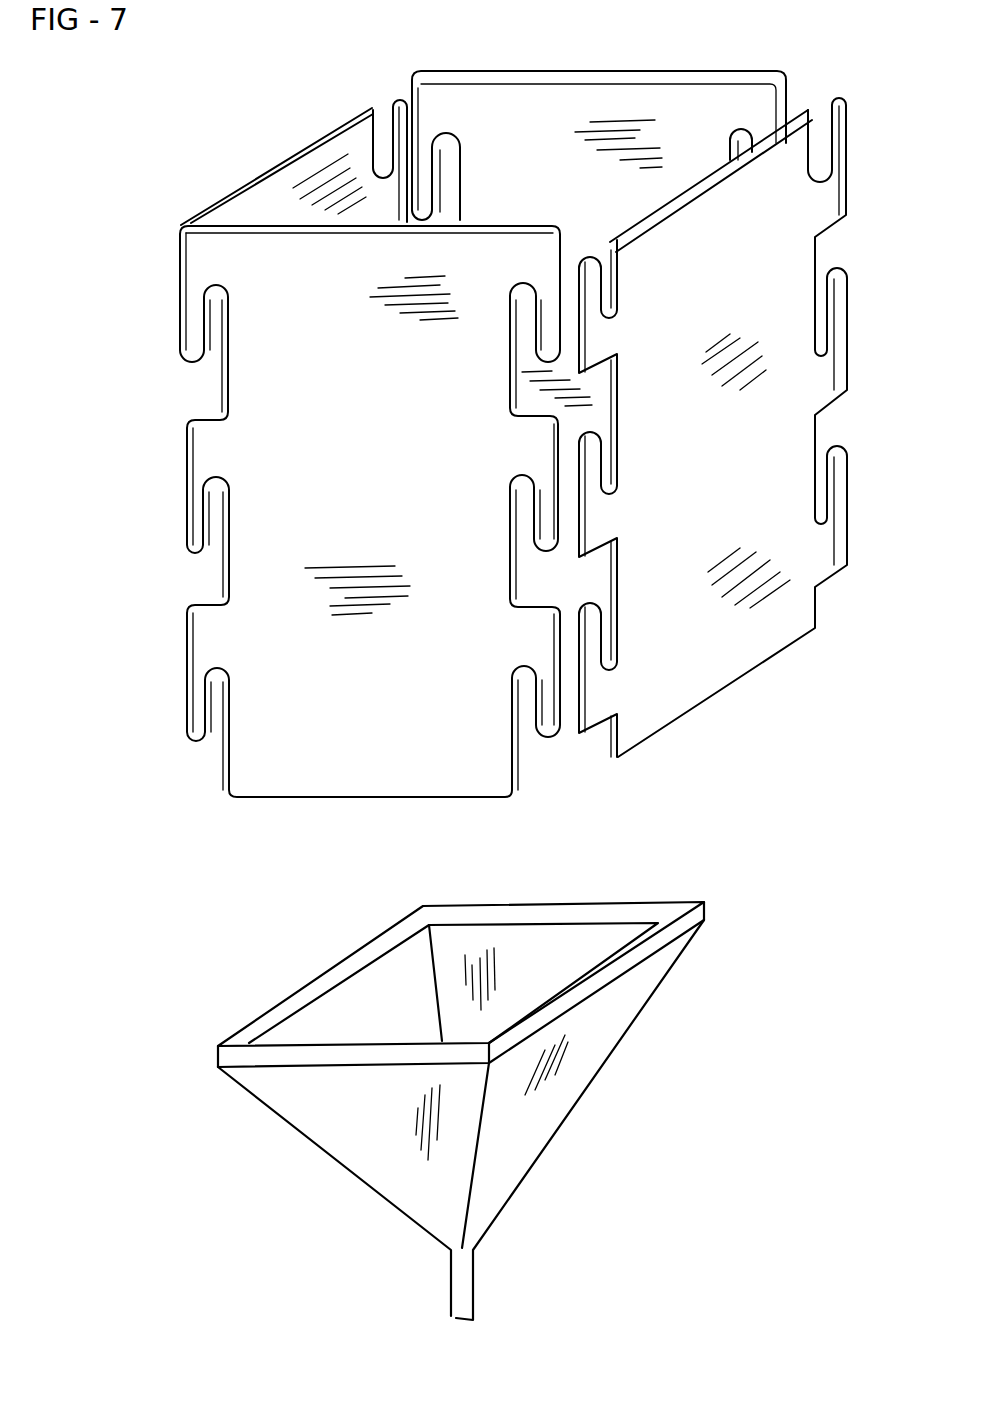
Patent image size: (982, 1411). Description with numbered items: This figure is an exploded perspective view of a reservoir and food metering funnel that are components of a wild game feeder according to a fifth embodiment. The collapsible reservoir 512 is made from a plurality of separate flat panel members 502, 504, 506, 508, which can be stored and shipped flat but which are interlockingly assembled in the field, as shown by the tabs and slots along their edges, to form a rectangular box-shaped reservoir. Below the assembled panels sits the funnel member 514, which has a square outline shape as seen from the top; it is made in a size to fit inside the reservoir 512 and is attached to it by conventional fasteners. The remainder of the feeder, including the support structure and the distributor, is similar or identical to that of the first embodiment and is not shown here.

The flat panel member 502 is at (381, 465).
The flat panel member 504 is at (737, 298).
The flat panel member 506 is at (542, 195).
The flat panel member 508 is at (298, 157).
The collapsible reservoir 512 is at (152, 148).
The funnel member 514 is at (613, 1107).